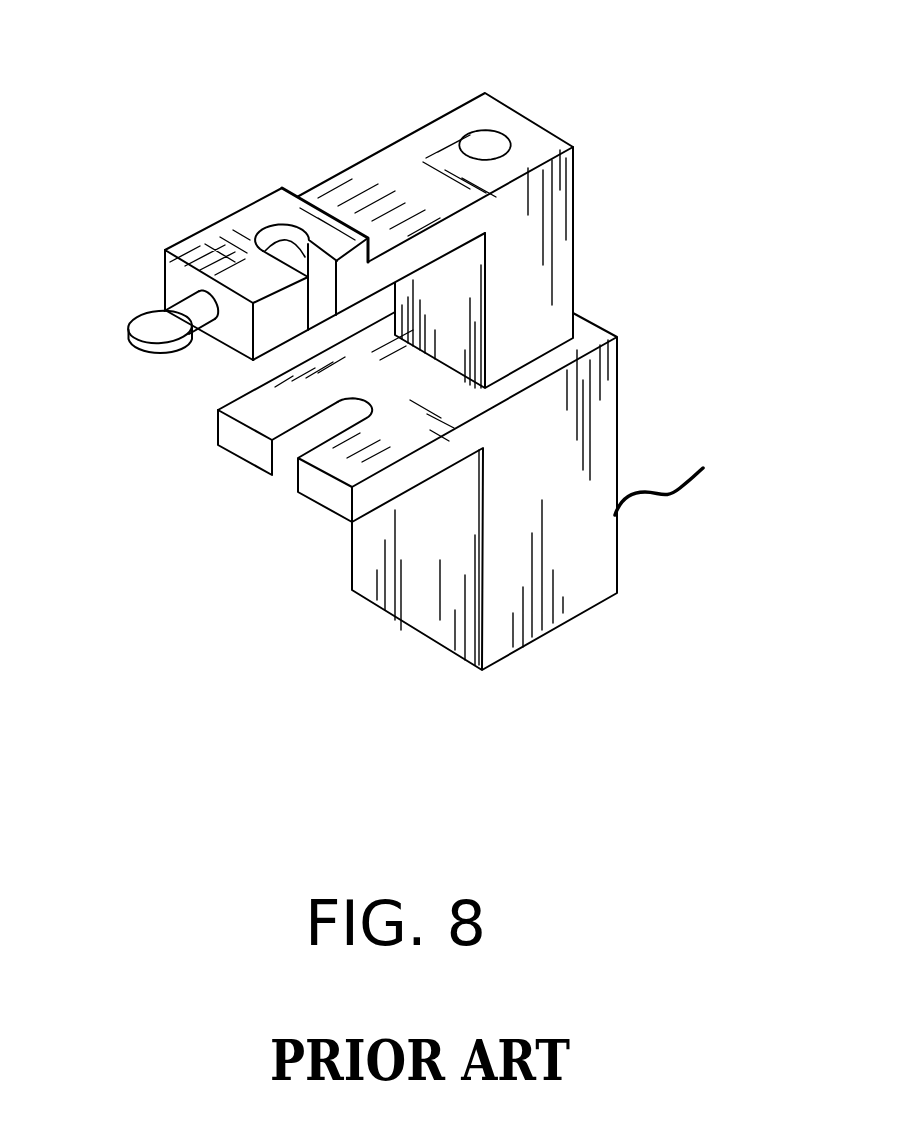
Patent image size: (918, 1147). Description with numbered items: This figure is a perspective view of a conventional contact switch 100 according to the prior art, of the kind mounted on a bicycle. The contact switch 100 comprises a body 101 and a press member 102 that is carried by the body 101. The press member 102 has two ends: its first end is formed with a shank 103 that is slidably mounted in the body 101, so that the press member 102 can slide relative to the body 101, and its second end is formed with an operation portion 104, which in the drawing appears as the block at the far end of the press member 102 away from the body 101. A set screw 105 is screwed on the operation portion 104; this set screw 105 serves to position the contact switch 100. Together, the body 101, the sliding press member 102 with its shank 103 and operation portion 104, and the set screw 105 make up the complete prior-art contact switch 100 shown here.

The contact switch 100 is at (646, 134).
The body 101 is at (592, 468).
The press member 102 is at (425, 147).
The shank 103 is at (551, 266).
The operation portion 104 is at (225, 233).
The set screw 105 is at (155, 330).